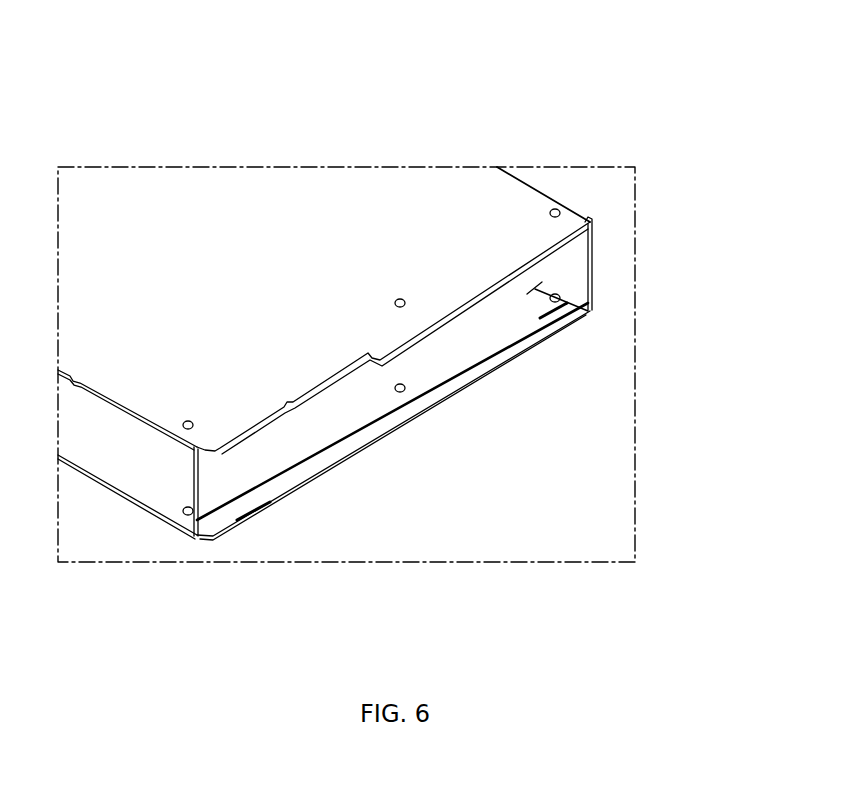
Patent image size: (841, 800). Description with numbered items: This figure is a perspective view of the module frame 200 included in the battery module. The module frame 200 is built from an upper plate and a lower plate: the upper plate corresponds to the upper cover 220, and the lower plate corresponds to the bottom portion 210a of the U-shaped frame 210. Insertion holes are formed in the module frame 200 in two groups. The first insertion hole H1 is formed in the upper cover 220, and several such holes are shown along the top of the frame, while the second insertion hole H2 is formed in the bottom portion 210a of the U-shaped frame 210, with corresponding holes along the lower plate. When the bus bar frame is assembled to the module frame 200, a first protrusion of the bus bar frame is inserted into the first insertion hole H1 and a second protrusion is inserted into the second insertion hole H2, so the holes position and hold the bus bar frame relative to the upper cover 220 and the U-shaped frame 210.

The module frame 200 is at (675, 64).
The upper cover 220 is at (550, 183).
The U-shaped frame 210 is at (600, 245).
The bottom portion 210a is at (540, 288).
The first insertion hole H1 is at (550, 215).
The second insertion hole H2 is at (553, 302).